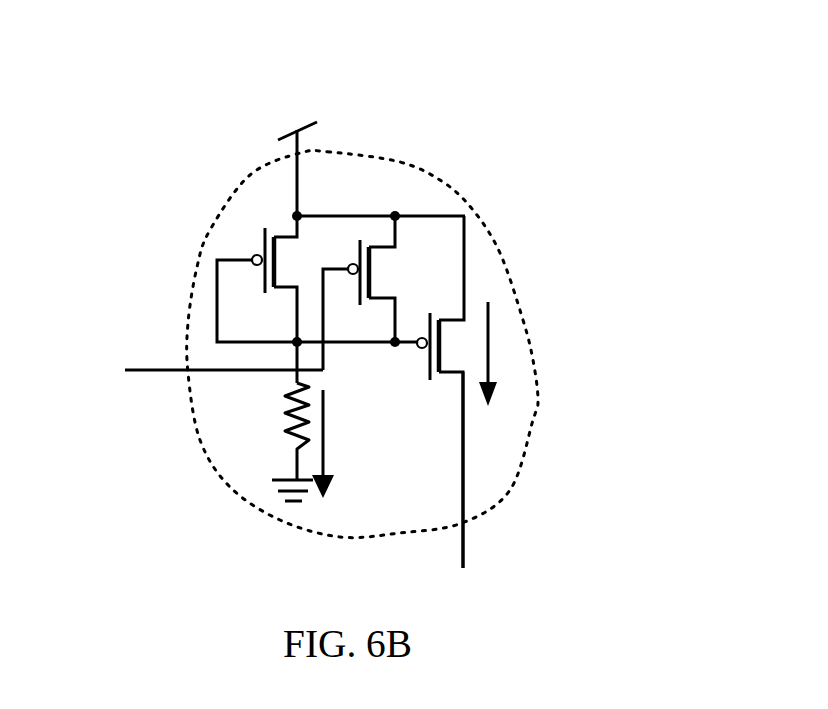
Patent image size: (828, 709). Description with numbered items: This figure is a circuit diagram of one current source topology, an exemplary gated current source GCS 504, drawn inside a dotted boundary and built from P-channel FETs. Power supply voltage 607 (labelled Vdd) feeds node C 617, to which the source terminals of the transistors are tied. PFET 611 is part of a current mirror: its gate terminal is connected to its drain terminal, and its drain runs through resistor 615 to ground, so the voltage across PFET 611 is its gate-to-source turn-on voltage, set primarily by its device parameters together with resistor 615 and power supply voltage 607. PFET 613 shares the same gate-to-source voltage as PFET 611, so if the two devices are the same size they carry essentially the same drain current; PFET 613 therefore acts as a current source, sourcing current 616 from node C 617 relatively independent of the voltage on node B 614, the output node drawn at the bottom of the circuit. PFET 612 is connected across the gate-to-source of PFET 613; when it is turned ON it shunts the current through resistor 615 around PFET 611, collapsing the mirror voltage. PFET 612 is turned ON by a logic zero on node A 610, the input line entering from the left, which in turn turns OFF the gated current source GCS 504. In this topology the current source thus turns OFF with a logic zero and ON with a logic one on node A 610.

The gated current source (GCS) 504 is at (538, 397).
The power supply voltage 607 is at (307, 75).
The node A 610 is at (133, 320).
The PFET 611 is at (250, 240).
The PFET 612 is at (392, 262).
The PFET 613 is at (463, 325).
The node B 614 is at (470, 490).
The resistor 615 is at (267, 417).
The current 616 is at (495, 343).
The node C 617 is at (295, 188).